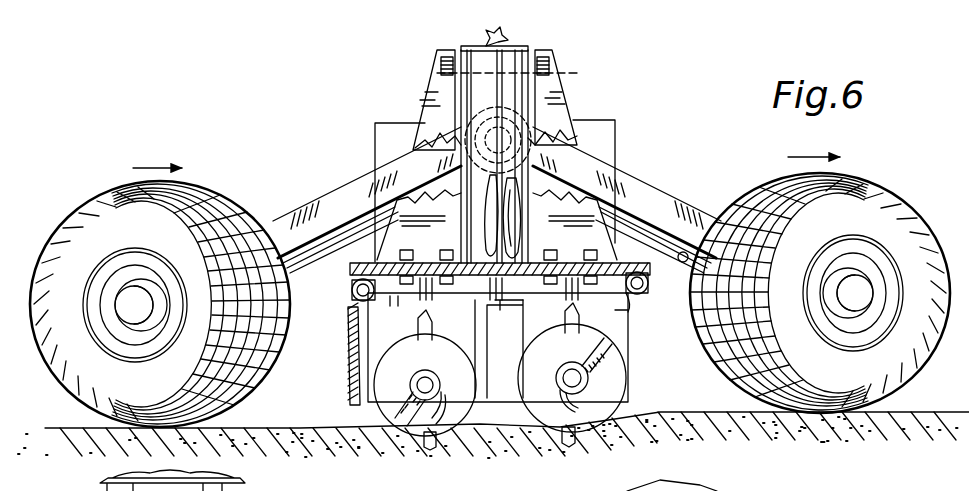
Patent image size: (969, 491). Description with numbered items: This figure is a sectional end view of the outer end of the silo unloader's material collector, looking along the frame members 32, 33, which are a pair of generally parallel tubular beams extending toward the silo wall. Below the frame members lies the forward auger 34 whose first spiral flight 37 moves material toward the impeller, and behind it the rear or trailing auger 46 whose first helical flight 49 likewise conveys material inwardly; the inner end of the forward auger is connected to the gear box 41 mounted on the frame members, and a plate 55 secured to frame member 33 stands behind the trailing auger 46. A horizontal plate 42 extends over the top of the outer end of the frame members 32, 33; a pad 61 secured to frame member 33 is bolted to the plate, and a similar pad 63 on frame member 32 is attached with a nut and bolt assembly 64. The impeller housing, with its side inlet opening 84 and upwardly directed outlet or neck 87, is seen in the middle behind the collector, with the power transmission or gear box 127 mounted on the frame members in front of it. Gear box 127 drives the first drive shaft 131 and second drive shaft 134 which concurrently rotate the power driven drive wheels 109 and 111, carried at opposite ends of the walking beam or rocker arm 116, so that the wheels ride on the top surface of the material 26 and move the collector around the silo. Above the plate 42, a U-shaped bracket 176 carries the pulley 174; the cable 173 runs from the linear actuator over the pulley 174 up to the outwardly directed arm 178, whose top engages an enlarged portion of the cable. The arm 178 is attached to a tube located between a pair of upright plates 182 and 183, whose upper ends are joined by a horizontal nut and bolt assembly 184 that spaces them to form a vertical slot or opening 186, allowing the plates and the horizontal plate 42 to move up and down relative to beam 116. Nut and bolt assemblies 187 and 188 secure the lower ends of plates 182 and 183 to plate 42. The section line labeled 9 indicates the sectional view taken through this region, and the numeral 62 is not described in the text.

The section line 9- 9 is at (499, 0).
The material 26 is at (283, 428).
The frame member 32 is at (352, 288).
The frame member 33 is at (648, 290).
The forward auger 34 is at (560, 442).
The first spiral flight 37 is at (626, 400).
The gear box 41 is at (625, 331).
The horizontal plate 42 is at (358, 266).
The rear auger 46 is at (385, 447).
The first helical flight 49 is at (445, 450).
The plate 55 is at (348, 348).
The pad 61 is at (594, 290).
The bearing bracket 62 is at (632, 311).
The pad 63 is at (402, 297).
The nut and bolt assembly 64 is at (376, 300).
The side inlet opening 84 is at (487, 346).
The outlet or neck 87 is at (492, 302).
The drive wheel 109 is at (880, 190).
The drive wheel 111 is at (88, 205).
The walking beam or rocker arm 116 is at (630, 178).
The power transmission or gear box 127 is at (607, 118).
The first drive shaft 131 is at (653, 223).
The second drive shaft 134 is at (327, 237).
The cable 173 is at (500, 90).
The pulley 174 is at (482, 210).
The U-shaped bracket 176 is at (515, 228).
The arm 178 is at (518, 50).
The upright plate 182 is at (435, 73).
The upright plate 183 is at (553, 78).
The nut and bolt assembly 184 is at (433, 55).
The vertical slot or opening 186 is at (478, 180).
The nut and bolt assembly 187 is at (440, 225).
The nut and bolt assembly 188 is at (580, 247).